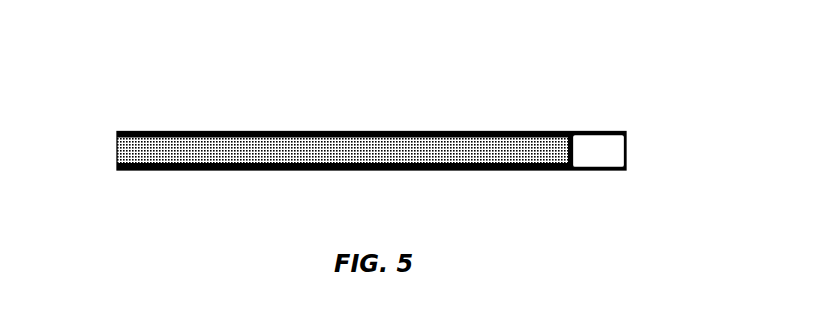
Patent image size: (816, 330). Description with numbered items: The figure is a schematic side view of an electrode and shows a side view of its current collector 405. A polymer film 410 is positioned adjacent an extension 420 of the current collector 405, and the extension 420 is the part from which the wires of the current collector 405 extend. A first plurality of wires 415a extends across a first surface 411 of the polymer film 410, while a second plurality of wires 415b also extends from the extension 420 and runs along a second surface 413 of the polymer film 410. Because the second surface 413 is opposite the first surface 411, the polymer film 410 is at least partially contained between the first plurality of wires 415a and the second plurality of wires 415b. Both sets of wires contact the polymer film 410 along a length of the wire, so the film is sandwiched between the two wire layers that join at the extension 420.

The polymer film 410 is at (373, 153).
The first surface 411 is at (148, 132).
The second surface 413 is at (136, 170).
The first plurality of wires 415a is at (297, 130).
The second plurality of wires 415b is at (219, 170).
The current collector 405 is at (485, 131).
The extension 420 is at (626, 160).